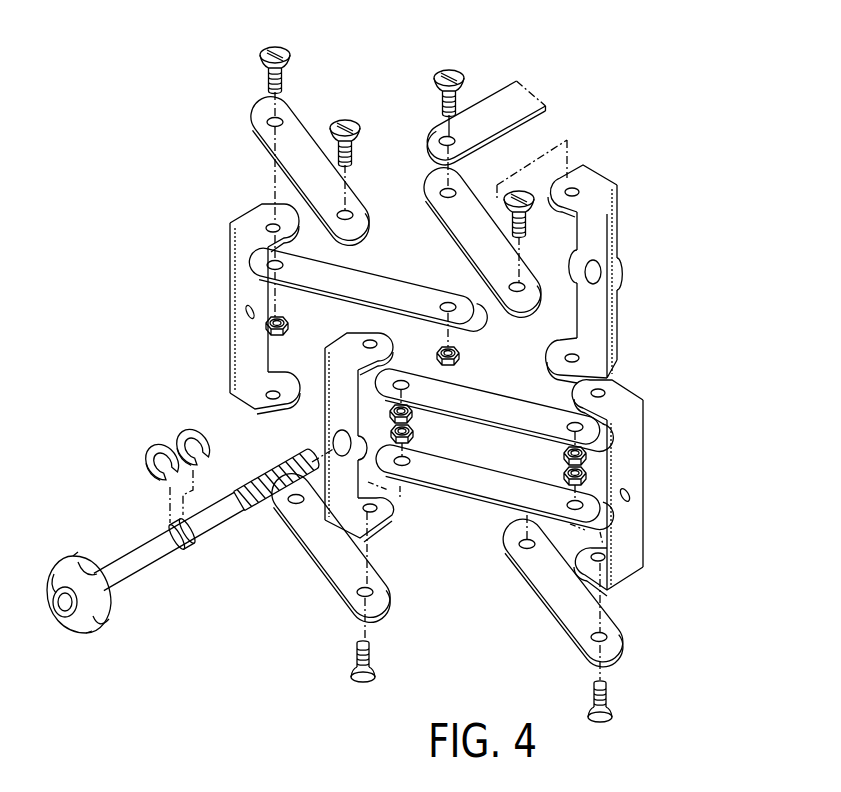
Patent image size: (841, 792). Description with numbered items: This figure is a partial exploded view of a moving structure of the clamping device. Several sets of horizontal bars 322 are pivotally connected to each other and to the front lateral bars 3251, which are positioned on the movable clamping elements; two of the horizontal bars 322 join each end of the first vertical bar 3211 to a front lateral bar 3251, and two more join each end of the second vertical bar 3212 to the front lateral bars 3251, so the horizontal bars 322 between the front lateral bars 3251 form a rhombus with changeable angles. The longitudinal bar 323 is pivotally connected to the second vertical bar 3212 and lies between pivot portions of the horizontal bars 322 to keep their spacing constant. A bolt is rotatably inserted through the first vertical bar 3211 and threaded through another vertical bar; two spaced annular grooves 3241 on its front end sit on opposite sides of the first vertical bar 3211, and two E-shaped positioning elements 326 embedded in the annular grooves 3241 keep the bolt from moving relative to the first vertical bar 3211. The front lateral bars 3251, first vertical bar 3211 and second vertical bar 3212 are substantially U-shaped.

The horizontal bars 322 is at (293, 137).
The longitudinal bar 323 is at (500, 100).
The front lateral bars 3251 is at (243, 287).
The second vertical bar 3212 is at (600, 317).
The first vertical bar 3211 is at (343, 514).
The annular grooves 3241 is at (185, 548).
The E-shaped positioning elements 326 is at (163, 443).